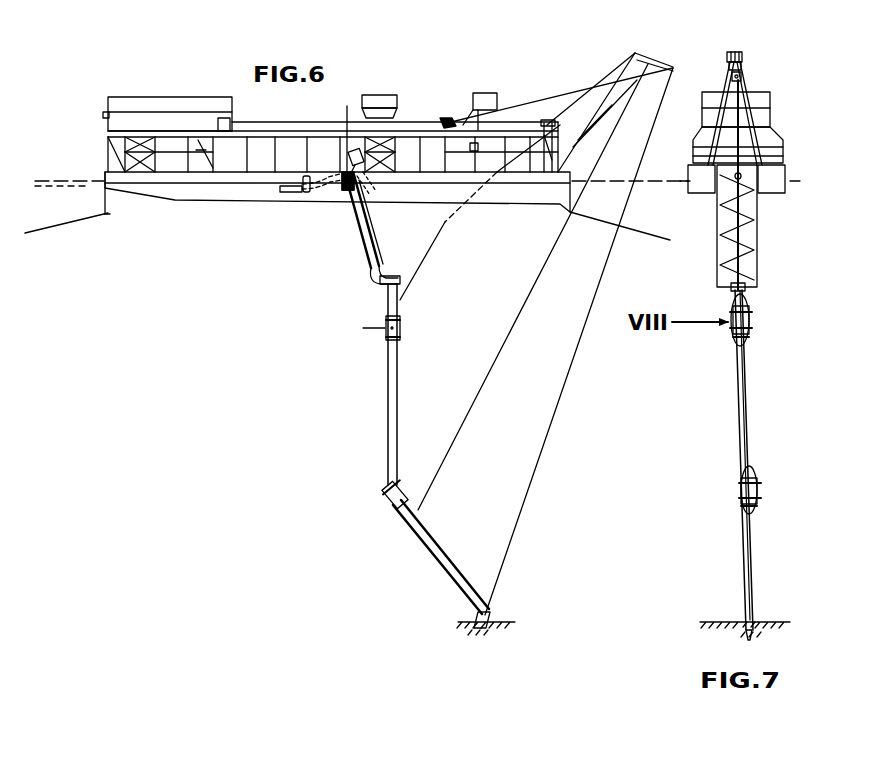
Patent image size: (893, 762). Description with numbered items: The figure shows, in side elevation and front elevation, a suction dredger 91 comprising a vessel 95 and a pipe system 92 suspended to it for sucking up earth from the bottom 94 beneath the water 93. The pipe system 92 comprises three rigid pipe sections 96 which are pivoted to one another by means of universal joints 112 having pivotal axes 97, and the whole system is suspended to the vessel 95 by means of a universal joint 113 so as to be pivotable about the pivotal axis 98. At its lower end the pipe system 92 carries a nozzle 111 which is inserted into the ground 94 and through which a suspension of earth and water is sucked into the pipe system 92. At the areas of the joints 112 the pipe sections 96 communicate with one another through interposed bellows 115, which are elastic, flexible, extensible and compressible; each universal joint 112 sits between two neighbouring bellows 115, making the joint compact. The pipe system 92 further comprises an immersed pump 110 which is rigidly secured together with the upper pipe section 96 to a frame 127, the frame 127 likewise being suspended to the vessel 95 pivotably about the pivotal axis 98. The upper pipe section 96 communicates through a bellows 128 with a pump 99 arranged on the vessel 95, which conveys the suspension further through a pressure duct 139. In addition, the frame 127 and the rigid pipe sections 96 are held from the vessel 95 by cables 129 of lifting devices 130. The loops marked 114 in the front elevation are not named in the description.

In FIG. 6, the suction dredger 91 is at (100, 108).
In FIG. 7, the suction dredger 91 is at (748, 72).
In FIG. 6, the pipe system 92 is at (420, 300).
In FIG. 6, the water 93 is at (650, 186).
In FIG. 6, the bottom 94 is at (500, 620).
In FIG. 7, the bottom 94 is at (724, 620).
In FIG. 6, the vessel 95 is at (240, 193).
In FIG. 7, the vessel 95 is at (702, 176).
In FIG. 6, the rigid pipe sections 96 is at (365, 233).
In FIG. 7, the rigid pipe sections 96 is at (735, 251).
In FIG. 6, the pivotal axes 97 is at (400, 328).
In FIG. 7, the pivotal axes 97 is at (718, 326).
In FIG. 6, the pivotal axis 98 is at (345, 191).
In FIG. 6, the pump 99 is at (306, 193).
In FIG. 6, the immersed pump 110 is at (392, 276).
In FIG. 7, the immersed pump 110 is at (748, 290).
In FIG. 6, the nozzle 111 is at (496, 623).
In FIG. 7, the nozzle 111 is at (752, 640).
In FIG. 6, the universal joints 112 is at (384, 338).
In FIG. 7, the universal joints 112 is at (732, 338).
In FIG. 6, the universal joint 113 is at (337, 192).
In FIG. 7, the loop / sling 114 is at (733, 306).
In FIG. 6, the bellows 115 is at (386, 321).
In FIG. 7, the bellows 115 is at (752, 314).
In FIG. 7, the frame 127 is at (756, 240).
In FIG. 6, the bellows 128 is at (347, 136).
In FIG. 6, the cables 129 is at (442, 219).
In FIG. 7, the cables 129 is at (714, 128).
In FIG. 6, the lifting devices 130 is at (628, 60).
In FIG. 6, the pressure duct 139 is at (290, 193).